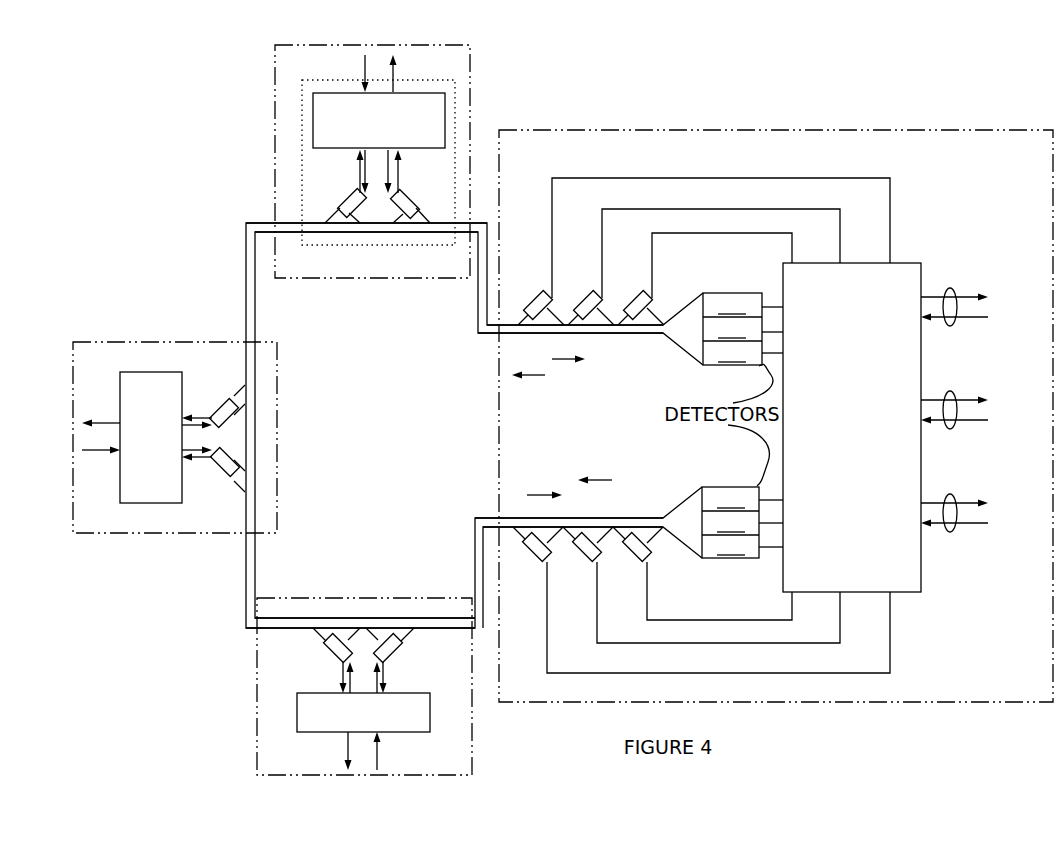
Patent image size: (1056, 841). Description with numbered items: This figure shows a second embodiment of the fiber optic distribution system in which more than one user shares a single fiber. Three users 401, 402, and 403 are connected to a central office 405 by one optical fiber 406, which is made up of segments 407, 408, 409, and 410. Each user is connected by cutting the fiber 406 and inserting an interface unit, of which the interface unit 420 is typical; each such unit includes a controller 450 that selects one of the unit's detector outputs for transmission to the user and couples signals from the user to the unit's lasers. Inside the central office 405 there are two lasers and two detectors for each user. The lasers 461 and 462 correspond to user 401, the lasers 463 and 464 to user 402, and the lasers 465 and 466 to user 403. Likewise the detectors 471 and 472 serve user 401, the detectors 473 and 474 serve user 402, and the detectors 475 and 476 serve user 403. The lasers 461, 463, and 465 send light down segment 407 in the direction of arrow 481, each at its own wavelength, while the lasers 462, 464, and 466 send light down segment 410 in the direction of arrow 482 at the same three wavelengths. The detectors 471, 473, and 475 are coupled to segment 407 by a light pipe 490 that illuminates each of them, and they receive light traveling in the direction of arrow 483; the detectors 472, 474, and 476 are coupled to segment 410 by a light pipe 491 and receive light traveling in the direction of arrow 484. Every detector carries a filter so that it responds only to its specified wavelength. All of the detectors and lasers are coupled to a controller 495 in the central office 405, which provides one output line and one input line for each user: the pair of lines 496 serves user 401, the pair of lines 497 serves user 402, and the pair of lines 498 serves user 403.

The user 401 is at (280, 767).
The user 402 is at (93, 348).
The user 403 is at (277, 83).
The central office 405 is at (910, 147).
The optical fiber 406 is at (232, 642).
The segment of optical fiber 407 is at (480, 316).
The segment of optical fiber 408 is at (262, 228).
The segment of optical fiber 409 is at (250, 597).
The segment of optical fiber 410 is at (478, 543).
The interface unit 420 is at (442, 182).
The controller 450 is at (348, 731).
The laser 461 is at (543, 297).
The laser 462 is at (533, 556).
The laser 463 is at (593, 300).
The laser 464 is at (583, 556).
The laser 465 is at (643, 298).
The laser 466 is at (633, 556).
The detector 471 is at (732, 305).
The detector 472 is at (731, 499).
The detector 473 is at (732, 329).
The detector 474 is at (731, 523).
The detector 475 is at (732, 353).
The detector 476 is at (731, 546).
The arrow 481 is at (527, 378).
The arrow 482 is at (597, 483).
The arrow 483 is at (585, 360).
The arrow 484 is at (547, 488).
The light pipe 490 is at (728, 310).
The light pipe 491 is at (721, 537).
The controller 495 is at (836, 450).
The pair of lines 496 is at (953, 493).
The pair of lines 497 is at (953, 390).
The pair of lines 498 is at (953, 288).